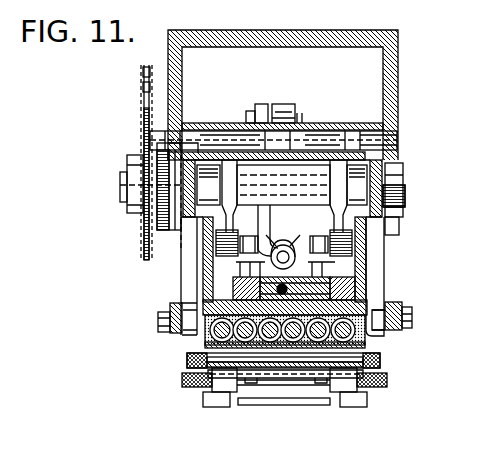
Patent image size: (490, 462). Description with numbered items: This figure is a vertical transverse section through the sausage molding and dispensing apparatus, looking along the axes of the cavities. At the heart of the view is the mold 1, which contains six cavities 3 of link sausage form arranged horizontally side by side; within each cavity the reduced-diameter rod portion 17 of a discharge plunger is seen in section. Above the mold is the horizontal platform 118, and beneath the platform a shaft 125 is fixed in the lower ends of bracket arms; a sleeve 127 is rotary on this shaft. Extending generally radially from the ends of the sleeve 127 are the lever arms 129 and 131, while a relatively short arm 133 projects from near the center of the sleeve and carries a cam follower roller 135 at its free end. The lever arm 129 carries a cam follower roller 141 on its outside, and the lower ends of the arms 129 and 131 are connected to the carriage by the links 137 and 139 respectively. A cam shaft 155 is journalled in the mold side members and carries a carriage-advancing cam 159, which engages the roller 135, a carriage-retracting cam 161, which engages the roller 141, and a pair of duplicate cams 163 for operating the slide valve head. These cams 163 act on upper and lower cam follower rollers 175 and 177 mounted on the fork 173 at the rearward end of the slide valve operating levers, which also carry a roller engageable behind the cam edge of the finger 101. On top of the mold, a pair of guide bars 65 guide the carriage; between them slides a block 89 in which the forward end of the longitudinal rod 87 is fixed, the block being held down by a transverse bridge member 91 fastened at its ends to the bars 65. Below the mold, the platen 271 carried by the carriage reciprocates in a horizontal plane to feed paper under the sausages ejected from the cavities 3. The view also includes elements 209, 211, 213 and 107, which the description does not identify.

The platform 118 is at (298, 33).
The upper cam follower roller 175 is at (212, 122).
The arm 133 is at (261, 104).
The cam follower roller 135 is at (281, 104).
The carriage-advancing cam 159 is at (300, 113).
The shaft 125 is at (398, 137).
The sleeve 127 is at (337, 123).
The rack 213 is at (140, 86).
The gear 209 is at (143, 150).
The cam shaft 155 is at (120, 185).
The gear 211 is at (168, 230).
The lever arm 131 is at (190, 264).
The lever arm 129 is at (378, 275).
The slide valve operating cams 163 is at (230, 187).
The finger 101 is at (270, 225).
The fork 173 is at (248, 215).
The roller 107 is at (286, 245).
The lower cam follower roller 177 is at (232, 256).
The bridge member 91 is at (236, 284).
The rod 87 is at (287, 285).
The block 89 is at (327, 279).
The rod portion 17 is at (348, 332).
The cavities 3 is at (205, 340).
The platen 271 is at (188, 362).
The link 139 is at (174, 332).
The guide bars 65 is at (208, 294).
The mold 1 is at (375, 311).
The link 137 is at (400, 328).
The cam follower roller 141 is at (405, 205).
The carriage-retracting cam 161 is at (399, 226).